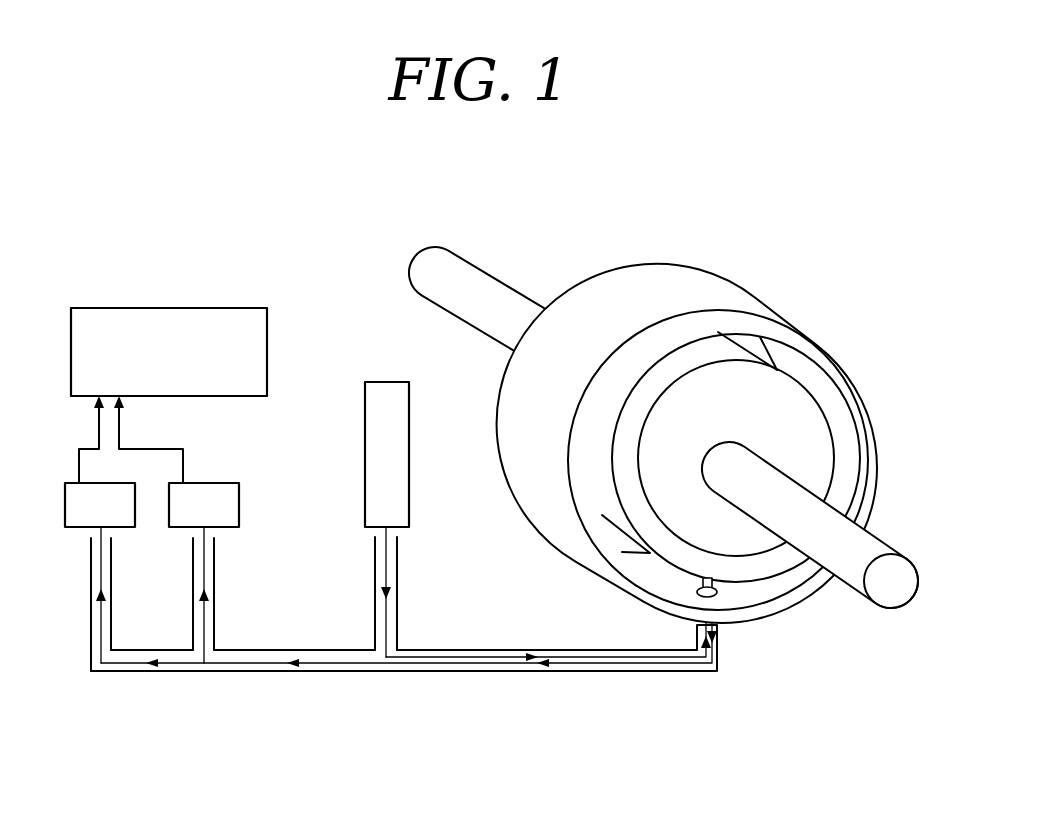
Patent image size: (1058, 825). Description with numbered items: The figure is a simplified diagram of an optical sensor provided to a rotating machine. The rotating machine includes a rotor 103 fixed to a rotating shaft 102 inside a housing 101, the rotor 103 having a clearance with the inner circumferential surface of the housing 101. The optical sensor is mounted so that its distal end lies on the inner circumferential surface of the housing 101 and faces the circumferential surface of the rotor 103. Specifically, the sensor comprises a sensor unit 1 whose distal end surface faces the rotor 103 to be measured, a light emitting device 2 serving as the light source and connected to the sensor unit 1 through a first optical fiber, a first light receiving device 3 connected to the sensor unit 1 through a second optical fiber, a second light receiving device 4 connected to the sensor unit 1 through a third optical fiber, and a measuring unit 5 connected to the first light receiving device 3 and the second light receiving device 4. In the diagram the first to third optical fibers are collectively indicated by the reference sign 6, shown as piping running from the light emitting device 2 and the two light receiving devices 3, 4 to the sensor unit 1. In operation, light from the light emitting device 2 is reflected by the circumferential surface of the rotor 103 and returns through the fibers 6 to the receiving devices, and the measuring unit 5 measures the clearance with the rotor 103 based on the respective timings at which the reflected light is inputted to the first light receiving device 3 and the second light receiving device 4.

The sensor unit 1 is at (718, 589).
The light emitting device 2 is at (378, 482).
The first light receiving device 3 is at (75, 512).
The second light receiving device 4 is at (231, 512).
The measuring unit 5 is at (174, 312).
The optical fibers 6 is at (463, 672).
The housing 101 is at (712, 293).
The rotating shaft 102 is at (893, 588).
The rotor 103 is at (643, 485).